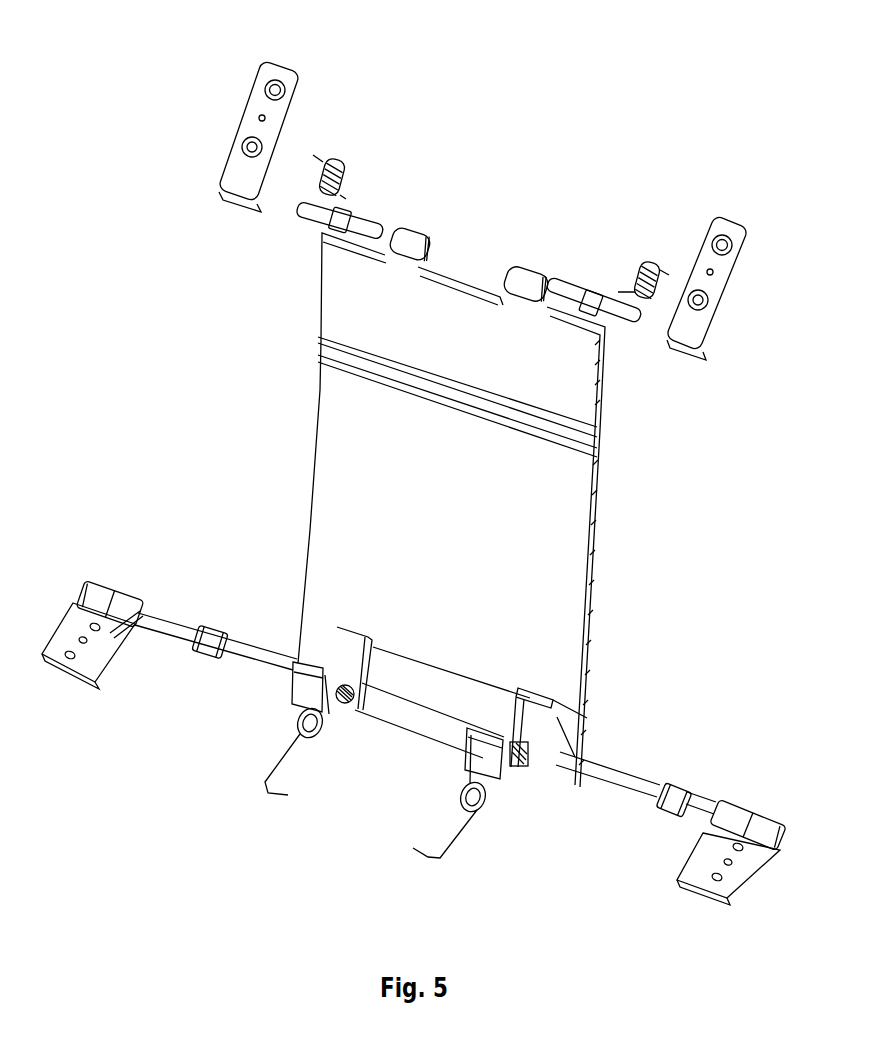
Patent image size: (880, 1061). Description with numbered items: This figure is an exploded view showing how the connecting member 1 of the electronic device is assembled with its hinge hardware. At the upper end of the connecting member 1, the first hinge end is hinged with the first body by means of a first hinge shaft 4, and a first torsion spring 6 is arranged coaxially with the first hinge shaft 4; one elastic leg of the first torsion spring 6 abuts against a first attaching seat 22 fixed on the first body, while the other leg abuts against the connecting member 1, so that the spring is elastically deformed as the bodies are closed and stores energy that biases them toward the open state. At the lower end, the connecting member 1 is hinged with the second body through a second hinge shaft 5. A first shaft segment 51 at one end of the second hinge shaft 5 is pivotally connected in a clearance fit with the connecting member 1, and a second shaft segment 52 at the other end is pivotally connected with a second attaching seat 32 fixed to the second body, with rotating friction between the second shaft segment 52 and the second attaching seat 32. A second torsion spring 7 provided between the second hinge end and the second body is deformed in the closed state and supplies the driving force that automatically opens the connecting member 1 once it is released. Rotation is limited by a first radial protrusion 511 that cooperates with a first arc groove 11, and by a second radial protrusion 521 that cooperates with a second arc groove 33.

The connecting member 1 is at (578, 545).
The first arc groove 11 is at (575, 787).
The first attaching seat 22 is at (258, 97).
The second attaching seat 32 is at (90, 662).
The second arc groove 33 is at (130, 627).
The first hinge shaft 4 is at (368, 220).
The second hinge shaft 5 is at (217, 597).
The first shaft segment 51 is at (280, 657).
The first radial protrusion 511 is at (225, 642).
The second shaft segment 52 is at (160, 617).
The second radial protrusion 521 is at (197, 647).
The first torsion spring 6 is at (328, 170).
The second torsion spring 7 is at (267, 792).